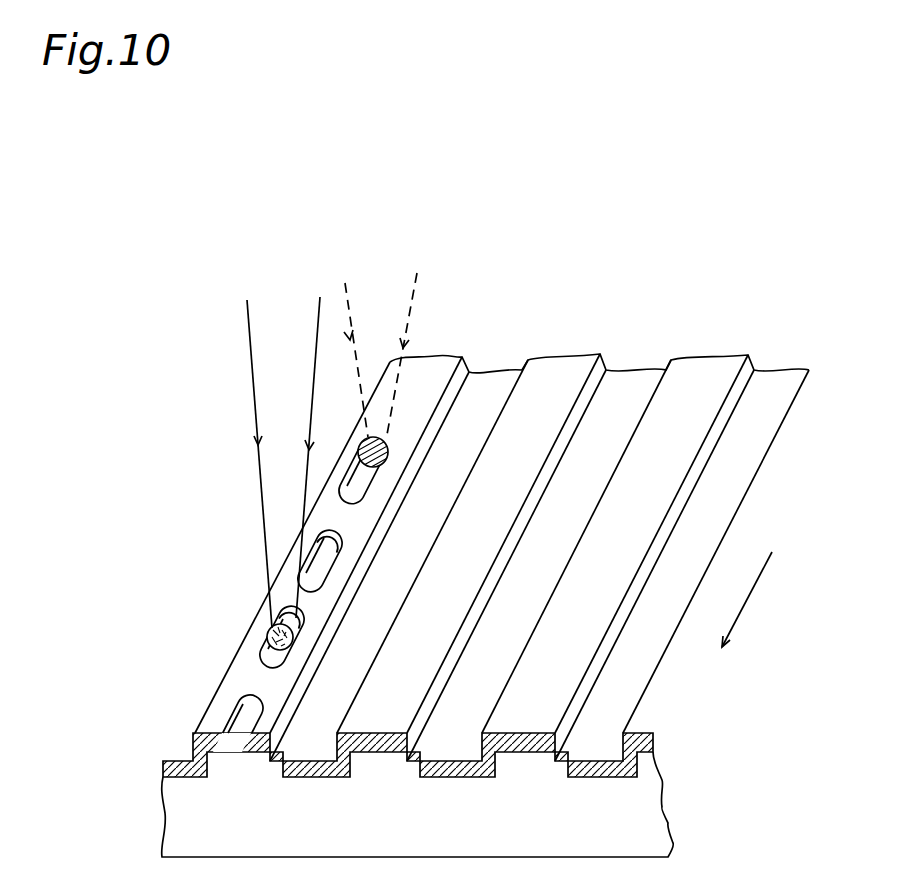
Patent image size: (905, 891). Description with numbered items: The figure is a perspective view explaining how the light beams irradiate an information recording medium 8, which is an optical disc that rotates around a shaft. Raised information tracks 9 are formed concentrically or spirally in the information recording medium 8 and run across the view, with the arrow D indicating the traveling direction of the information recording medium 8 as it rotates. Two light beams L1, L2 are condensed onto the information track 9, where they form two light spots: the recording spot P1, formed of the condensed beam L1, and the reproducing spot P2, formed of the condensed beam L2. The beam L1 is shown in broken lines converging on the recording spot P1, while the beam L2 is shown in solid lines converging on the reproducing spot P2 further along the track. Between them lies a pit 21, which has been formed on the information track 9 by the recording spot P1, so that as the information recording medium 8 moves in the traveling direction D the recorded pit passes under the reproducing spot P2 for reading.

The information recording medium 8 is at (653, 793).
The information track 9 is at (438, 355).
The pit 21 is at (333, 541).
The recording spot P1 is at (360, 455).
The reproducing spot P2 is at (265, 633).
The light beam L1 is at (415, 308).
The light beam L2 is at (248, 370).
The traveling direction D is at (745, 615).